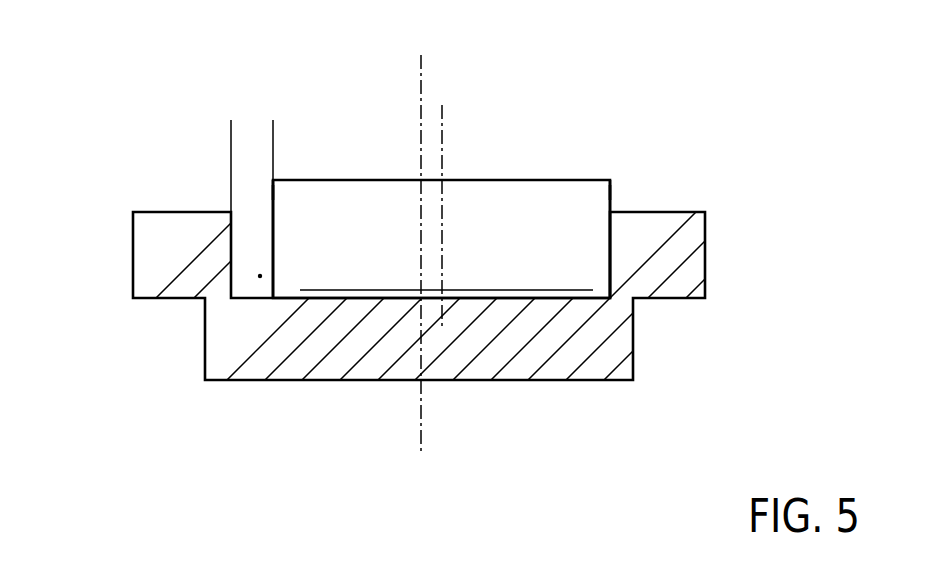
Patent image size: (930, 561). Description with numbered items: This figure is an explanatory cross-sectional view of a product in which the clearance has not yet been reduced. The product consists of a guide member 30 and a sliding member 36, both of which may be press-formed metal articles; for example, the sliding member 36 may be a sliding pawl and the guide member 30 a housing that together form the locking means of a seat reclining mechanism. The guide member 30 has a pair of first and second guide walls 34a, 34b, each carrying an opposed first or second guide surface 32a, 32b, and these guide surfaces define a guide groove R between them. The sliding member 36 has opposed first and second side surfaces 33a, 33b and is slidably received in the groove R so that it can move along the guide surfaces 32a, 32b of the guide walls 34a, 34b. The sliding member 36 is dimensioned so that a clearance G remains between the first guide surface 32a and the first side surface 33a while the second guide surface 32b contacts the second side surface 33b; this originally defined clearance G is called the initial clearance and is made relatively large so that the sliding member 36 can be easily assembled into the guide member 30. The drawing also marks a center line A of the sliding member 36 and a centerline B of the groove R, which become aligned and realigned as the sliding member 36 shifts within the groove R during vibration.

The guide member 30 is at (512, 372).
The first guide surface 32a is at (232, 268).
The second guide surface 32b is at (609, 240).
The first side surface 33a is at (273, 198).
The second side surface 33b is at (612, 196).
The first guide wall 34a is at (183, 243).
The second guide wall 34b is at (652, 235).
The sliding member 36 is at (520, 200).
The guide groove R is at (260, 276).
The center line of the sliding member A is at (442, 130).
The centerline of the guide groove B is at (421, 93).
The clearance G is at (308, 132).